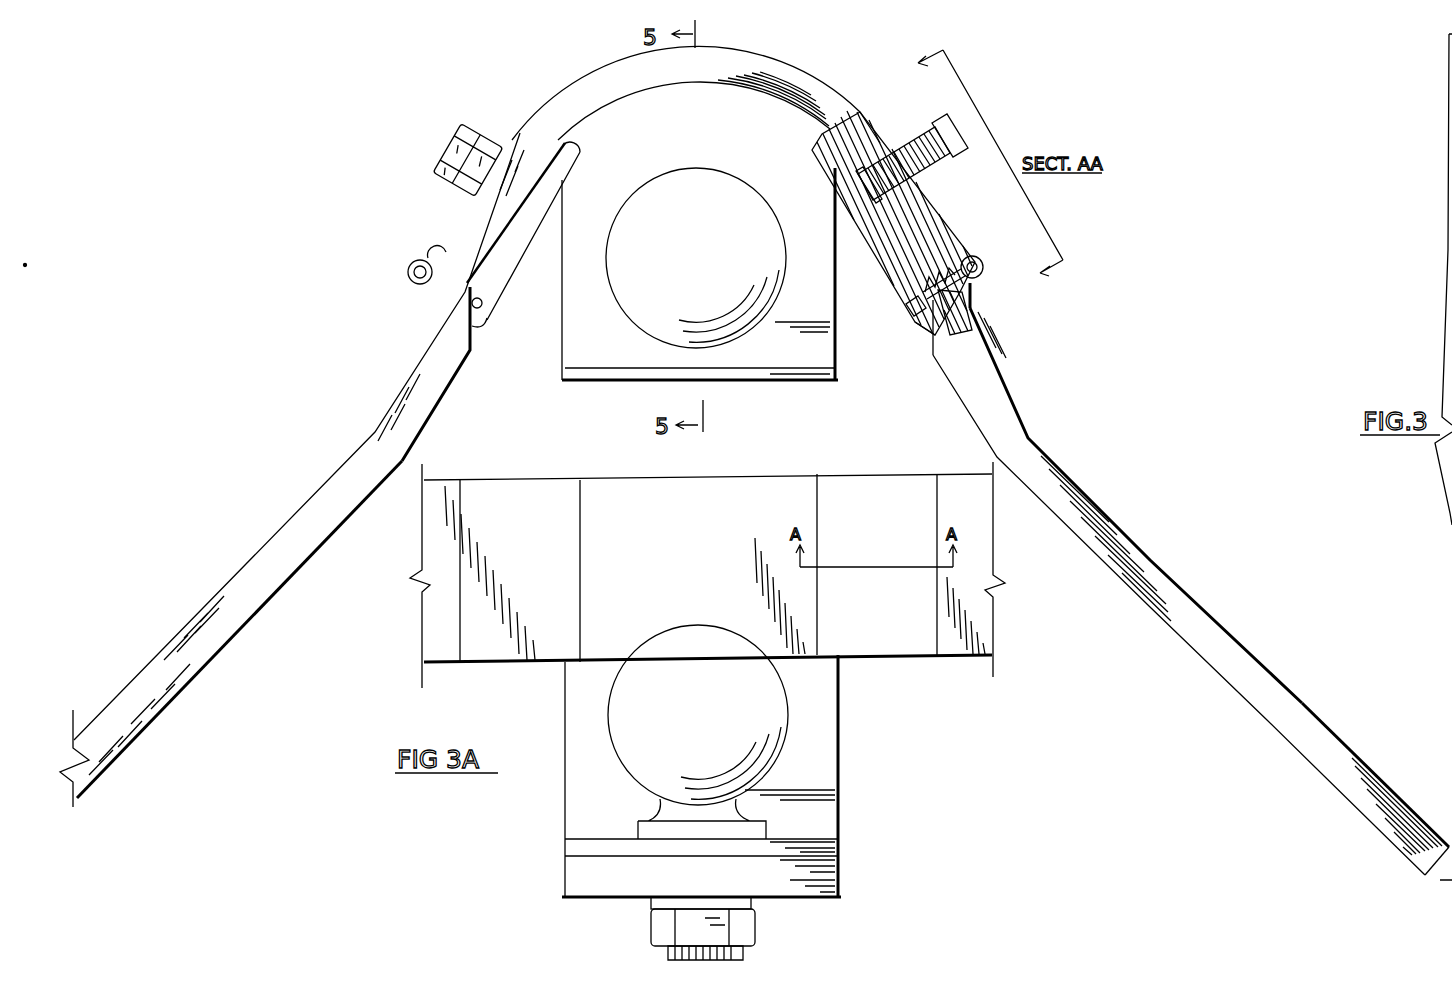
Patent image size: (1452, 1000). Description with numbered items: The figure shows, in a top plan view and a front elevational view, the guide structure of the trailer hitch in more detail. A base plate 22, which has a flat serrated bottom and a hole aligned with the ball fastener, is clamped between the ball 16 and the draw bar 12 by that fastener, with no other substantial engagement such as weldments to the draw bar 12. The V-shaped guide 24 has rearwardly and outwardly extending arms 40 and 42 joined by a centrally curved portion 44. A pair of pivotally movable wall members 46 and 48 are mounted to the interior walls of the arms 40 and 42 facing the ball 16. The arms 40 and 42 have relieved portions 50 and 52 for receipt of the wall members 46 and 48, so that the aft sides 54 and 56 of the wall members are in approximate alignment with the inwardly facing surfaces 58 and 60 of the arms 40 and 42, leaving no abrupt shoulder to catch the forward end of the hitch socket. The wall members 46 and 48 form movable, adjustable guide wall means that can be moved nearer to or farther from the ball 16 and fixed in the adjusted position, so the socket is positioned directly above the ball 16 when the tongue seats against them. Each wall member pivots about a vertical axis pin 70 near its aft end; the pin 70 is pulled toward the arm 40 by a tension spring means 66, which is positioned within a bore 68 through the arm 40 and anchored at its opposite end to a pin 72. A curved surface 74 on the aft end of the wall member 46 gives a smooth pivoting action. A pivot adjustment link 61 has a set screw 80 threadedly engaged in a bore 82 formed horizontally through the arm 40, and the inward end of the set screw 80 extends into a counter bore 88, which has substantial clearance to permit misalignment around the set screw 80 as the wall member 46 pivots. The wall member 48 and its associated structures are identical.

In FIG. 3A, the draw bar 12 is at (841, 883).
In FIG. 3, the ball 16 is at (660, 307).
In FIG. 3A, the ball 16 is at (760, 677).
In FIG. 3A, the base plate 22 is at (842, 843).
In FIG. 3, the V-shaped guide 24 is at (1196, 617).
In FIG. 3, the arm 40 is at (1358, 766).
In FIG. 3, the arm 42 is at (230, 599).
In FIG. 3, the centrally curved portion 44 is at (752, 67).
In FIG. 3, the wall member 46 is at (906, 280).
In FIG. 3A, the wall member 46 is at (878, 492).
In FIG. 3, the wall member 48 is at (500, 290).
In FIG. 3A, the wall member 48 is at (515, 495).
In FIG. 3, the relieved portion 50 is at (936, 258).
In FIG. 3, the relieved portion 52 is at (497, 231).
In FIG. 3, the aft side 54 is at (921, 326).
In FIG. 3, the aft side 56 is at (513, 372).
In FIG. 3, the inwardly facing surface 58 is at (947, 373).
In FIG. 3, the inwardly facing surface 60 is at (424, 427).
In FIG. 3, the pivot adjustment link 61 is at (906, 128).
In FIG. 3, the tension spring means 66 is at (970, 284).
In FIG. 3, the bore 68 is at (970, 325).
In FIG. 3, the vertical axis pin 70 is at (918, 302).
In FIG. 3, the pin 72 is at (983, 272).
In FIG. 3, the curved surface 74 is at (970, 350).
In FIG. 3, the set screw 80 is at (967, 145).
In FIG. 3, the bore 82 is at (868, 117).
In FIG. 3, the counter bore 88 is at (880, 200).